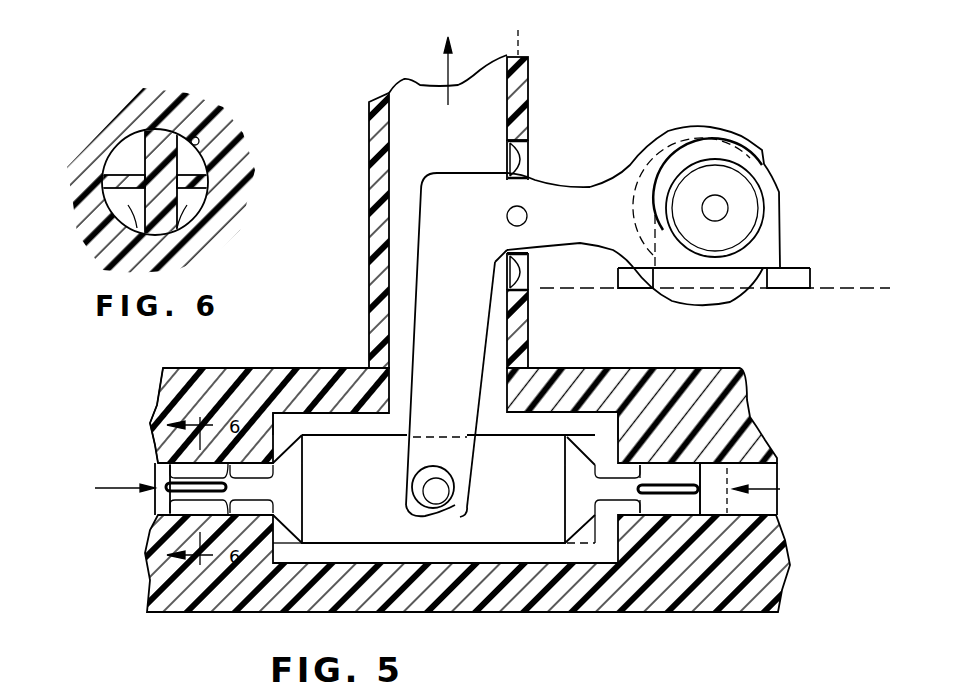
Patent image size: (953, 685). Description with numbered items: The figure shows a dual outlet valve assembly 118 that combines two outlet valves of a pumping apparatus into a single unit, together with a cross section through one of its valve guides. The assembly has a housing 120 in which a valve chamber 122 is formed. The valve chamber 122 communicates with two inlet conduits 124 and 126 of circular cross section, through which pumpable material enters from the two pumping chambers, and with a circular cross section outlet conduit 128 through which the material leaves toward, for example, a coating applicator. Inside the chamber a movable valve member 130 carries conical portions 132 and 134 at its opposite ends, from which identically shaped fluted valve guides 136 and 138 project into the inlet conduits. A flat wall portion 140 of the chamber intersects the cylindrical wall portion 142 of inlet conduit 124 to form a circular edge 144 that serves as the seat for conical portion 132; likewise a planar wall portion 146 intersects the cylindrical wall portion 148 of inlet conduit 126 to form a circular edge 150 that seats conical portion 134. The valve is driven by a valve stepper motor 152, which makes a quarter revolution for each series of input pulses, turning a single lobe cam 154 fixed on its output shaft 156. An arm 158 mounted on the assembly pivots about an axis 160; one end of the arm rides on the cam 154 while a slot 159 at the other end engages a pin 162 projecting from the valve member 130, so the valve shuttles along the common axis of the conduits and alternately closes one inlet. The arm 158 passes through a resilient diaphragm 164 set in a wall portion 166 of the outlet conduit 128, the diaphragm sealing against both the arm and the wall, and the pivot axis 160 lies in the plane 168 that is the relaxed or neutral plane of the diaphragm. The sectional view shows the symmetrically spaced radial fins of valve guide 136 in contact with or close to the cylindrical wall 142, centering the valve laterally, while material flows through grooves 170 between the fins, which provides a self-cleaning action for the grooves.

In FIG. 5, the dual outlet valve assembly 118 is at (356, 321).
In FIG. 5, the housing 120 is at (368, 366).
In FIG. 6, the housing 120 is at (93, 148).
In FIG. 5, the valve chamber 122 is at (538, 553).
In FIG. 5, the inlet conduit 124 is at (150, 430).
In FIG. 5, the inlet conduit 126 is at (790, 459).
In FIG. 5, the outlet conduit 128 is at (527, 357).
In FIG. 5, the valve member 130 is at (345, 527).
In FIG. 5, the conical portion 132 is at (278, 495).
In FIG. 5, the conical portion 134 is at (605, 510).
In FIG. 5, the fluted valve guide 136 is at (173, 505).
In FIG. 6, the fluted valve guide 136 is at (212, 172).
In FIG. 5, the fluted valve guide 138 is at (648, 466).
In FIG. 5, the wall portion 140 is at (280, 432).
In FIG. 5, the cylindrical wall portion 142 is at (247, 462).
In FIG. 6, the cylindrical wall portion 142 is at (195, 137).
In FIG. 5, the circular edge 144 is at (275, 465).
In FIG. 5, the wall portion 146 is at (617, 430).
In FIG. 5, the cylindrical wall portion 148 is at (733, 463).
In FIG. 5, the circular edge 150 is at (636, 440).
In FIG. 5, the valve stepper motor 152 is at (782, 181).
In FIG. 5, the single lobe cam 154 is at (722, 168).
In FIG. 5, the stepper motor output shaft 156 is at (728, 203).
In FIG. 5, the arm 158 is at (418, 302).
In FIG. 5, the slot 159 is at (462, 513).
In FIG. 5, the pivot axis 160 is at (525, 210).
In FIG. 5, the pin 162 is at (464, 478).
In FIG. 5, the resilient diaphragm 164 is at (508, 157).
In FIG. 5, the wall portion 166 is at (530, 80).
In FIG. 5, the plane 168 is at (530, 130).
In FIG. 6, the grooves 170 is at (130, 228).